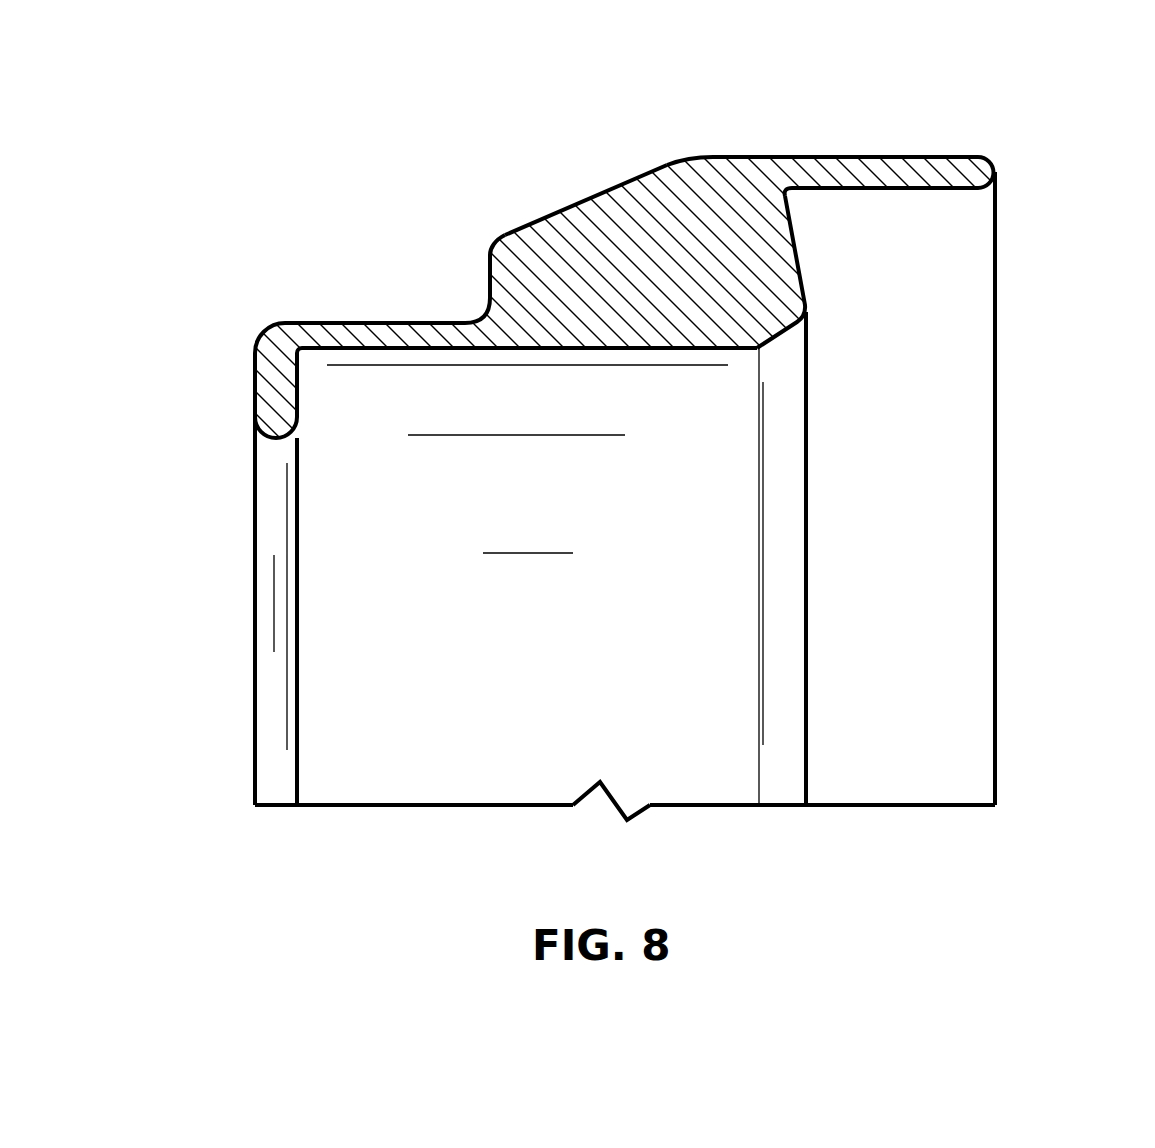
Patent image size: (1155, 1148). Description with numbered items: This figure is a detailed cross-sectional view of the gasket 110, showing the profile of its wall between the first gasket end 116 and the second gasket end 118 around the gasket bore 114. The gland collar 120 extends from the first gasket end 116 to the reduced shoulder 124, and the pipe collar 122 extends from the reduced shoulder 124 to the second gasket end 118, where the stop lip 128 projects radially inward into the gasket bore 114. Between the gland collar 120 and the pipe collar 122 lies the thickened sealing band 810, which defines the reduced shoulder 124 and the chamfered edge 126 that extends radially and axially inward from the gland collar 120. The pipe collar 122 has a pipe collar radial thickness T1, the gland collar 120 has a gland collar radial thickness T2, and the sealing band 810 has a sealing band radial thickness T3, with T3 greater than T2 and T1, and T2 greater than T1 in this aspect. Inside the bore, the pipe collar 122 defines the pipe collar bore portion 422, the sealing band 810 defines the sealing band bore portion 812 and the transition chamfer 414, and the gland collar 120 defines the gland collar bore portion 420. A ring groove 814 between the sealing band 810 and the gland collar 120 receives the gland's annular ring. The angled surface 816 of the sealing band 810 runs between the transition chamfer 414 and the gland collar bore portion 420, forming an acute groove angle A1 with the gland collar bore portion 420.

The gasket 110 is at (352, 83).
The gasket bore 114 is at (322, 692).
The first gasket end 116 is at (997, 172).
The second gasket end 118 is at (252, 342).
The gland collar 120 is at (887, 155).
The pipe collar 122 is at (377, 335).
The reduced shoulder 124 is at (488, 268).
The chamfered edge 126 is at (583, 198).
The stop lip 128 is at (263, 407).
The transition chamfer 414 is at (790, 588).
The gland collar bore portion 420 is at (980, 358).
The pipe collar bore portion 422 is at (342, 387).
The sealing band 810 is at (645, 283).
The sealing band bore portion 812 is at (673, 775).
The ring groove 814 is at (738, 158).
The angled surface 816 is at (811, 296).
The pipe collar radial thickness T1 is at (405, 327).
The gland collar radial thickness T2 is at (933, 160).
The sealing band radial thickness T3 is at (705, 166).
The groove angle A1 is at (875, 190).